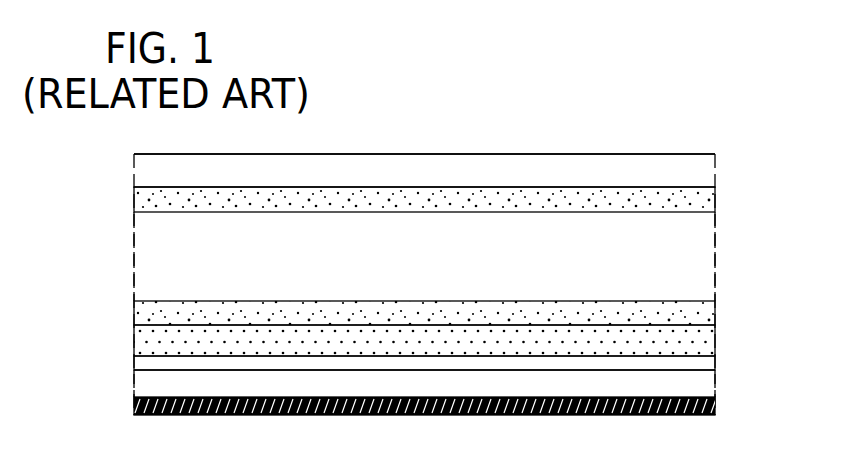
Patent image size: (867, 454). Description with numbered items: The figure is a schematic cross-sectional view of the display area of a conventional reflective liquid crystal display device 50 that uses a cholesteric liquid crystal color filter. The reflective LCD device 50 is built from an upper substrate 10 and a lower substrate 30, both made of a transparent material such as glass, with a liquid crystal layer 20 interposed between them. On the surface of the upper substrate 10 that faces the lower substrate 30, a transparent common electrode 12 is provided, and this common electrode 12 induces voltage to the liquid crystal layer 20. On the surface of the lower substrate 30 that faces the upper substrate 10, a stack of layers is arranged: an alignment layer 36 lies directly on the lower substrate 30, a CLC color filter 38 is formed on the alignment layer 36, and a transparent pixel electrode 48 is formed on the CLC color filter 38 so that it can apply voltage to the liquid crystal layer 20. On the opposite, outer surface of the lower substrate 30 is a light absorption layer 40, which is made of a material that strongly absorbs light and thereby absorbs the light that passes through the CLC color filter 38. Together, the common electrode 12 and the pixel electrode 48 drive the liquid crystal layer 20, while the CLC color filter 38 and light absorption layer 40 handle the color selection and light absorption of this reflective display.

The reflective LCD device 50 is at (684, 128).
The upper substrate 10 is at (442, 176).
The transparent common electrode 12 is at (700, 200).
The liquid crystal layer 20 is at (146, 268).
The transparent pixel electrode 48 is at (705, 313).
The CLC color filter 38 is at (700, 340).
The alignment layer 36 is at (703, 360).
The lower substrate 30 is at (442, 390).
The light absorption layer 40 is at (715, 405).